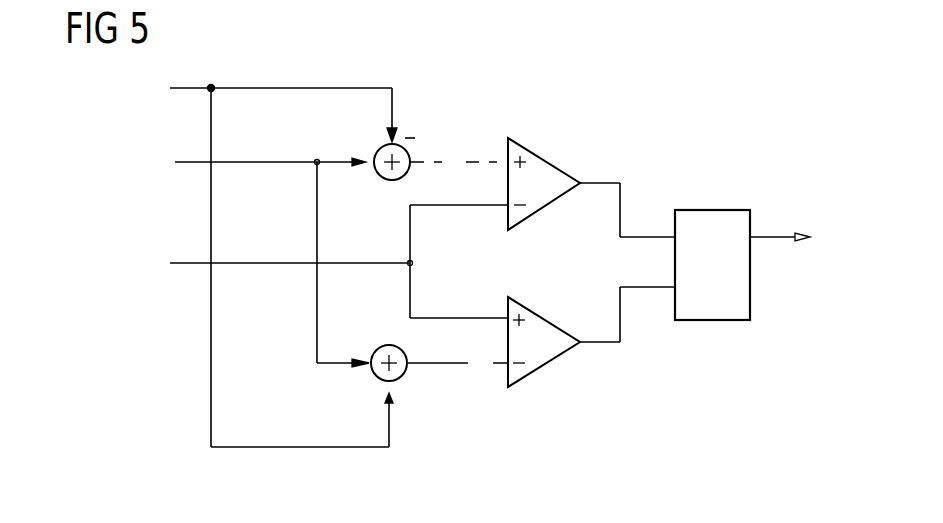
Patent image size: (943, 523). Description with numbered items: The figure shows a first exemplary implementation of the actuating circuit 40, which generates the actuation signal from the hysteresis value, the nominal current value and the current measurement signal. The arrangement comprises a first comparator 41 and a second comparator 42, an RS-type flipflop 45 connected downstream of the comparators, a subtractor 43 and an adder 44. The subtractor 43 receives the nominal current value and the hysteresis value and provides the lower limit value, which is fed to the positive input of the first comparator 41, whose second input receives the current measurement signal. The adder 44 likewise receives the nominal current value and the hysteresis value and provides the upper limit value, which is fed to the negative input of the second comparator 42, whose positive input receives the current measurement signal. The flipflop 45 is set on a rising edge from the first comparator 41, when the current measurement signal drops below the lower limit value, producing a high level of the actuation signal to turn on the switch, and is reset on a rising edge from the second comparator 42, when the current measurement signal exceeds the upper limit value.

The actuating circuit 40 is at (462, 78).
The first comparator 41 is at (545, 158).
The second comparator 42 is at (545, 316).
The subtractor 43 is at (390, 181).
The adder 44 is at (382, 347).
The RS-type flipflop 45 is at (710, 210).